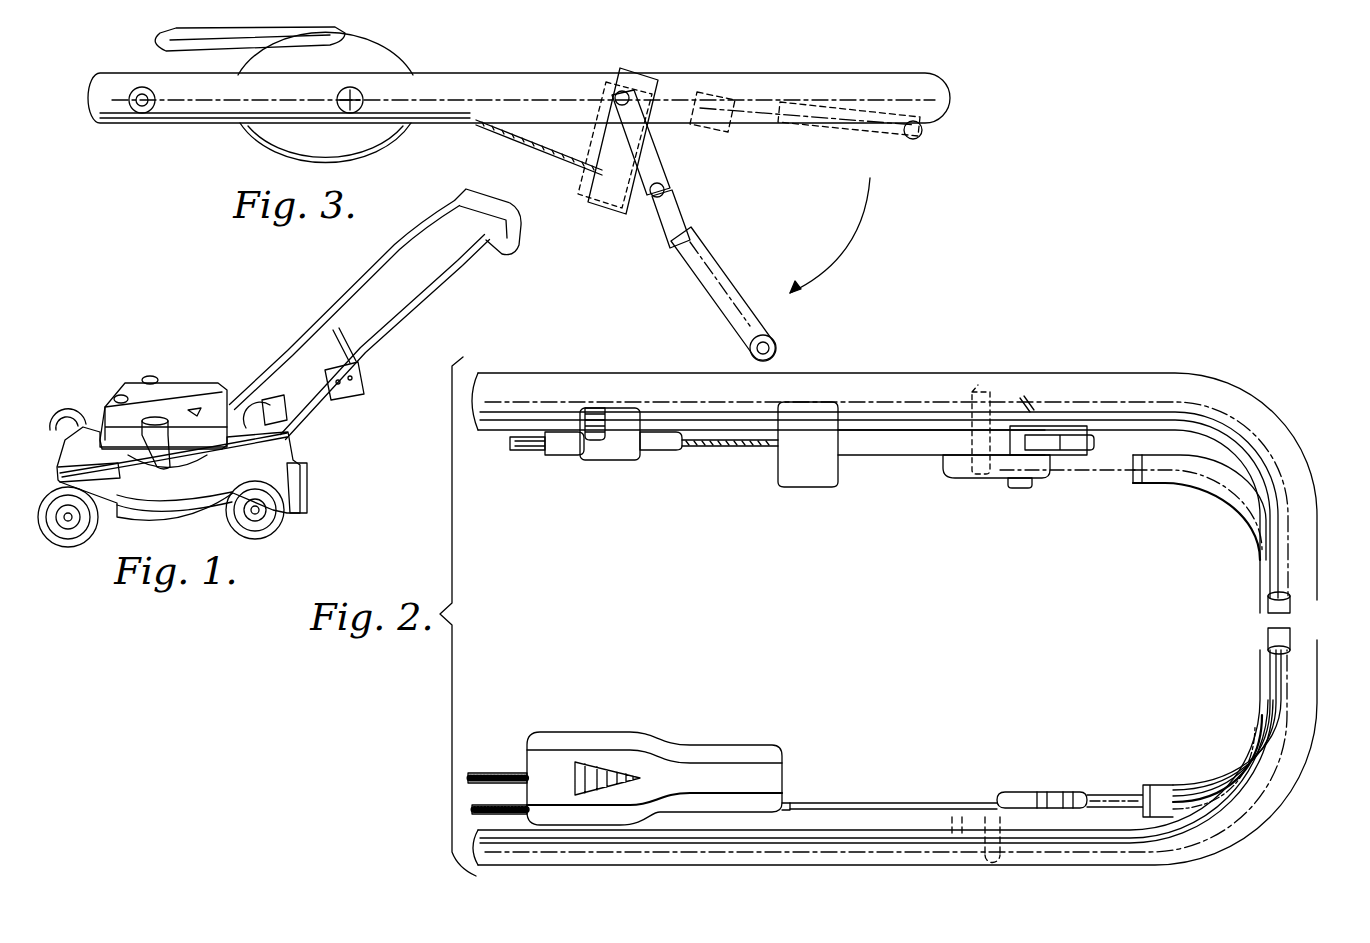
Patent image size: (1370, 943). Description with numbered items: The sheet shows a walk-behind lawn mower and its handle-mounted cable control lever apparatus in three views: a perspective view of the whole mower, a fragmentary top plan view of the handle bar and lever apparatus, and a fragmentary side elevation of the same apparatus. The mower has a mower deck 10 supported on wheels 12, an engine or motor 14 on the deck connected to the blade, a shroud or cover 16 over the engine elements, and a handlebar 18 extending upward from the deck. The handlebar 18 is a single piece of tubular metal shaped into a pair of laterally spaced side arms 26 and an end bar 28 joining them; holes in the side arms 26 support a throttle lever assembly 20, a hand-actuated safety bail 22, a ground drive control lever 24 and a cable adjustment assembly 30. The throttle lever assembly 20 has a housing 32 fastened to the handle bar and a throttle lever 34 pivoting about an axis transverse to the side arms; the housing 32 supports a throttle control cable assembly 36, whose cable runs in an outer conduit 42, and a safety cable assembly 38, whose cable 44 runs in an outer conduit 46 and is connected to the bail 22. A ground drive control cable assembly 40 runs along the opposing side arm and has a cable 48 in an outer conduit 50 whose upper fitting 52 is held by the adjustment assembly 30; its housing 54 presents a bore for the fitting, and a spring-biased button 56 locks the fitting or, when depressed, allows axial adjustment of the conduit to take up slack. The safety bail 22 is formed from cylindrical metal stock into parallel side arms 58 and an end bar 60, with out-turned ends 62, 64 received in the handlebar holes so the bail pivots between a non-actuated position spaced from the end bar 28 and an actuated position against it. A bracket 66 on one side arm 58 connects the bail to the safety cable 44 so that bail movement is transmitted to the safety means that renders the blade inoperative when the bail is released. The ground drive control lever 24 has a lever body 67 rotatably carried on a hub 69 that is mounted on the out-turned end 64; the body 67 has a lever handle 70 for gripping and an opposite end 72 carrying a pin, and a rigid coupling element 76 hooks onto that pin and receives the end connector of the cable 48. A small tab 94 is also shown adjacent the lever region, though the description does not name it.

In FIG. 1, the mower deck 10 is at (196, 483).
In FIG. 1, the wheels 12 is at (280, 423).
In FIG. 1, the engine or motor 14 is at (173, 443).
In FIG. 1, the shroud or cover 16 is at (138, 396).
In FIG. 3, the handlebar 18 is at (956, 80).
In FIG. 1, the handlebar 18 is at (365, 354).
In FIG. 2, the handlebar 18 is at (1290, 808).
In FIG. 3, the throttle lever assembly 20 is at (420, 52).
In FIG. 2, the throttle lever assembly 20 is at (766, 735).
In FIG. 3, the hand-actuated safety bail 22 is at (752, 279).
In FIG. 2, the hand-actuated safety bail 22 is at (1200, 775).
In FIG. 2, the ground drive control lever 24 is at (898, 474).
In FIG. 3, the side arms 26 is at (530, 82).
In FIG. 2, the side arms 26 is at (836, 382).
In FIG. 2, the end bar 28 is at (1302, 554).
In FIG. 2, the cable adjustment assembly 30 is at (610, 468).
In FIG. 3, the housing 32 is at (282, 136).
In FIG. 2, the housing 32 is at (703, 748).
In FIG. 3, the throttle lever 34 is at (175, 50).
In FIG. 2, the throttle lever 34 is at (604, 740).
In FIG. 2, the throttle control cable assembly 36 is at (476, 766).
In FIG. 2, the safety cable assembly 38 is at (470, 800).
In FIG. 2, the ground drive control cable assembly 40 is at (514, 458).
In FIG. 2, the outer conduit 42 is at (500, 772).
In FIG. 3, the cable 44 is at (556, 140).
In FIG. 2, the cable 44 is at (902, 803).
In FIG. 2, the outer conduit 46 is at (472, 812).
In FIG. 2, the cable 48 is at (712, 448).
In FIG. 2, the outer conduit 50 is at (516, 441).
In FIG. 2, the upper fitting 52 is at (660, 442).
In FIG. 2, the housing 54 is at (626, 458).
In FIG. 2, the button 56 is at (598, 412).
In FIG. 3, the side arms 58 is at (692, 215).
In FIG. 2, the side arms 58 is at (1104, 468).
In FIG. 2, the end bar 60 is at (1290, 634).
In FIG. 3, the out-turned end 62 is at (630, 74).
In FIG. 2, the out-turned end 62 is at (992, 860).
In FIG. 2, the out-turned end 64 is at (984, 392).
In FIG. 3, the bracket 66 is at (624, 205).
In FIG. 2, the bracket 66 is at (1040, 796).
In FIG. 2, the lever body 67 is at (915, 452).
In FIG. 2, the hub 69 is at (956, 464).
In FIG. 2, the lever handle 70 is at (793, 478).
In FIG. 2, the opposite end 72 is at (1073, 452).
In FIG. 2, the coupling element 76 is at (1092, 443).
In FIG. 2, the tab 94 is at (1015, 482).